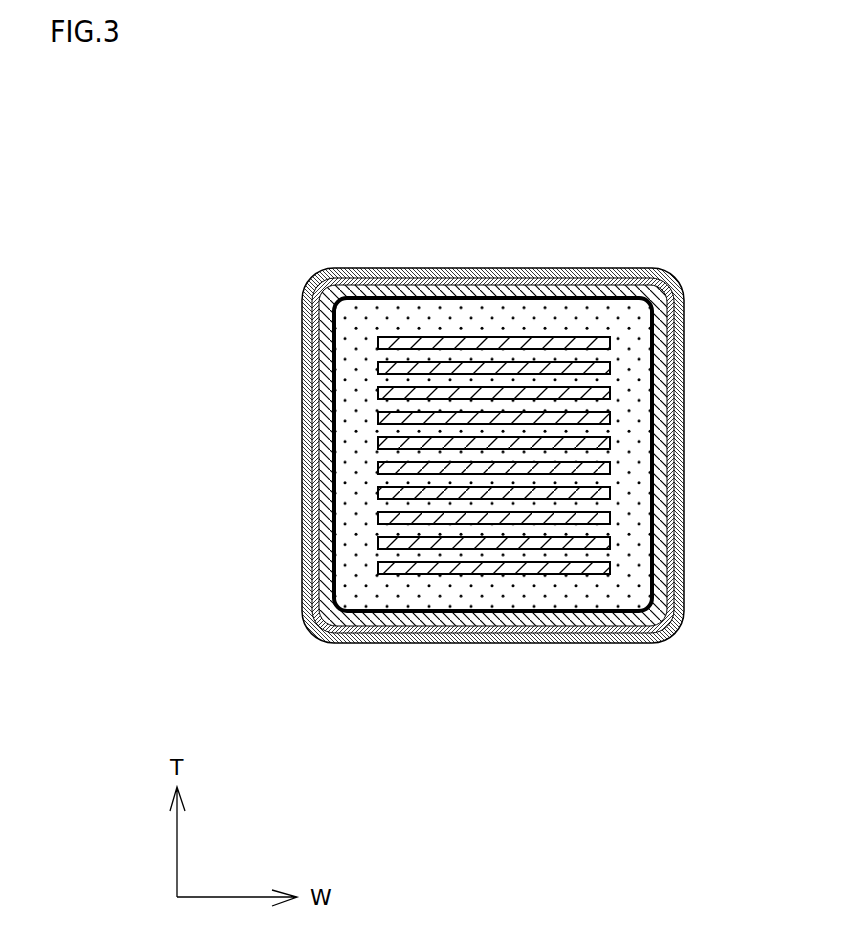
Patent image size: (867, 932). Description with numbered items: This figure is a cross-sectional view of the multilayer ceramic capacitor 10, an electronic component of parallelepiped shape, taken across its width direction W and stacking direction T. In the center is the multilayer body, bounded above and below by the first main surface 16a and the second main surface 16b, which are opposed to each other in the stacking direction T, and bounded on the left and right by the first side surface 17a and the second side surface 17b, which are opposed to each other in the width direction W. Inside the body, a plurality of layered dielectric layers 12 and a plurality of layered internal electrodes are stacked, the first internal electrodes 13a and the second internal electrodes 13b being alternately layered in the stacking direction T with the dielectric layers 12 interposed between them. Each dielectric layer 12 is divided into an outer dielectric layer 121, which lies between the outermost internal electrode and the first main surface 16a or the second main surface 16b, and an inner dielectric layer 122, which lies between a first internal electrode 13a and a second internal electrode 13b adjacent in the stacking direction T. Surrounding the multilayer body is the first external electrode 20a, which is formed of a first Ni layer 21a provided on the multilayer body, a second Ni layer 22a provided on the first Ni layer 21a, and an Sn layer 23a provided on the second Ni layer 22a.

The multilayer ceramic capacitor 10 is at (452, 406).
The dielectric layer 12 is at (491, 406).
The outer dielectric layer 121 is at (518, 312).
The inner dielectric layer 122 is at (500, 385).
The first internal electrode 13a is at (582, 387).
The second internal electrode 13b is at (570, 523).
The first main surface 16a is at (383, 293).
The second main surface 16b is at (435, 618).
The first side surface 17a is at (330, 523).
The second side surface 17b is at (657, 355).
The first external electrode 20a is at (396, 455).
The first Ni layer 21a is at (308, 362).
The second Ni layer 22a is at (316, 405).
The Sn layer 23a is at (438, 455).